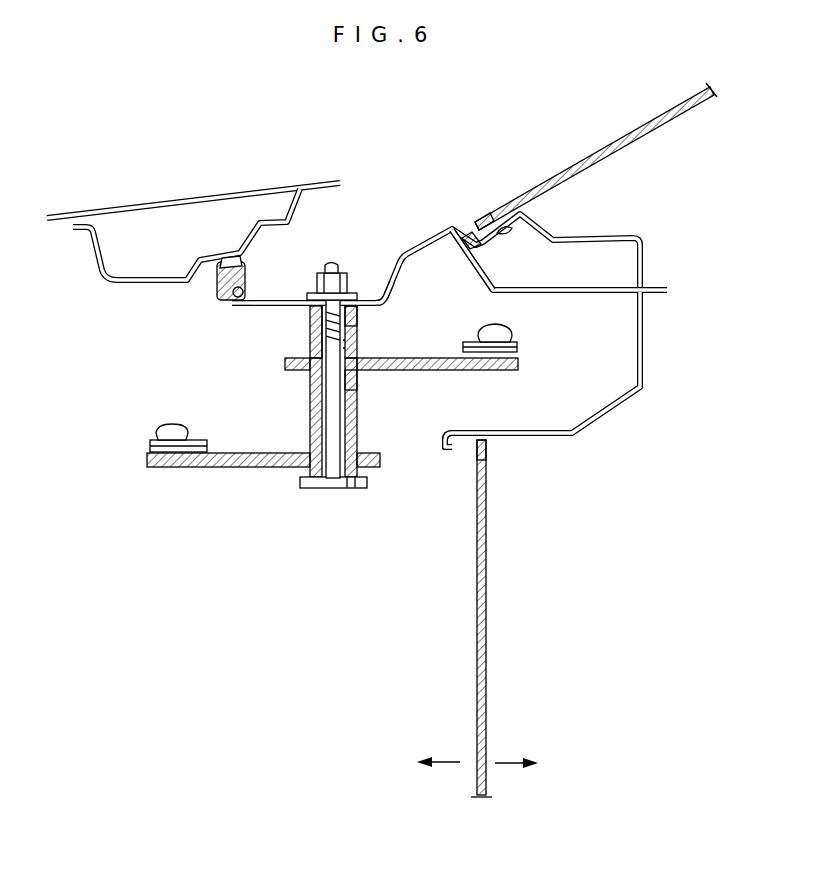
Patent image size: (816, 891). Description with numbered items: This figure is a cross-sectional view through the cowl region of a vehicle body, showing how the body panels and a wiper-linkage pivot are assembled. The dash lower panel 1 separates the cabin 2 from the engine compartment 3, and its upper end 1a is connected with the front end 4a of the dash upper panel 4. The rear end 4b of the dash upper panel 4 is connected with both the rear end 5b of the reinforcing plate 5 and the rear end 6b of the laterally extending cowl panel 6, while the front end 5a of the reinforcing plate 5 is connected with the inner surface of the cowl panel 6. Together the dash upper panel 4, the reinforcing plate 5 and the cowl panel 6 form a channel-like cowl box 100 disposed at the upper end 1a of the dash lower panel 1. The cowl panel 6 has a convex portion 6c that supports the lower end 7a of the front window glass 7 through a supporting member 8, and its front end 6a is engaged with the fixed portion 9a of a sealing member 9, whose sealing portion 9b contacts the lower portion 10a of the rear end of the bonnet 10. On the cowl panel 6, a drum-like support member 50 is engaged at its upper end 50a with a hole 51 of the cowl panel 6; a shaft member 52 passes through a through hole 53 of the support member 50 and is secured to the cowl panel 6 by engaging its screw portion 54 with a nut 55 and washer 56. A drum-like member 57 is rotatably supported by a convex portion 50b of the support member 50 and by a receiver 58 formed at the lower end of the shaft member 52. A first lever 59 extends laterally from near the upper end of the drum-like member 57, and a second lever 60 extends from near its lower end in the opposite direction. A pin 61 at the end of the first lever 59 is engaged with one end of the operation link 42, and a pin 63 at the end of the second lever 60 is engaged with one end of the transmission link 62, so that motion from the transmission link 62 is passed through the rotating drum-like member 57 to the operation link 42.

The dash lower panel 1 is at (487, 615).
The upper end of dash lower panel 1a is at (452, 447).
The cabin 2 is at (628, 627).
The engine compartment 3 is at (379, 633).
The dash upper panel 4 is at (608, 413).
The front end of dash upper panel 4a is at (450, 432).
The rear end of dash upper panel 4b is at (660, 310).
The reinforcing plate 5 is at (571, 288).
The front end of reinforcing plate 5a is at (458, 266).
The rear end of reinforcing plate 5b is at (672, 290).
The cowl panel 6 is at (273, 303).
The front end of cowl panel 6a is at (228, 305).
The rear end of cowl panel 6b is at (652, 280).
The convex portion of cowl panel 6c is at (470, 229).
The front window glass 7 is at (640, 118).
The lower end of front window glass 7a is at (493, 206).
The supporting member 8 is at (507, 236).
The sealing member 9 is at (244, 280).
The fixed portion of sealing member 9a is at (245, 305).
The sealing portion of sealing member 9b is at (258, 258).
The bonnet 10 is at (240, 186).
The lower portion of rear end of bonnet 10a is at (213, 252).
The operation link 42 is at (520, 350).
The support member 50 is at (357, 332).
The upper end of support member 50a is at (358, 318).
The convex portion of support member 50b is at (358, 378).
The hole of cowl panel 51 is at (310, 320).
The shaft member 52 is at (335, 428).
The through hole of support member 53 is at (346, 350).
The screw portion of shaft member 54 is at (292, 345).
The nut 55 is at (348, 270).
The washer 56 is at (381, 285).
The drum-like member 57 is at (310, 408).
The receiver 58 is at (353, 490).
The first lever 59 is at (470, 370).
The second lever 60 is at (247, 467).
The pin of first lever 61 is at (505, 330).
The transmission link 62 is at (150, 444).
The pin of second lever 63 is at (172, 424).
The cowl box 100 is at (624, 347).